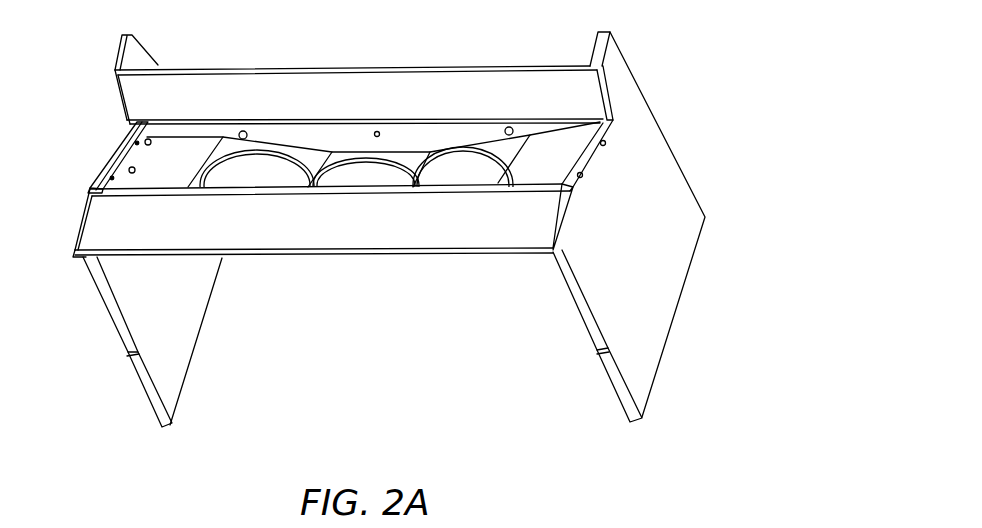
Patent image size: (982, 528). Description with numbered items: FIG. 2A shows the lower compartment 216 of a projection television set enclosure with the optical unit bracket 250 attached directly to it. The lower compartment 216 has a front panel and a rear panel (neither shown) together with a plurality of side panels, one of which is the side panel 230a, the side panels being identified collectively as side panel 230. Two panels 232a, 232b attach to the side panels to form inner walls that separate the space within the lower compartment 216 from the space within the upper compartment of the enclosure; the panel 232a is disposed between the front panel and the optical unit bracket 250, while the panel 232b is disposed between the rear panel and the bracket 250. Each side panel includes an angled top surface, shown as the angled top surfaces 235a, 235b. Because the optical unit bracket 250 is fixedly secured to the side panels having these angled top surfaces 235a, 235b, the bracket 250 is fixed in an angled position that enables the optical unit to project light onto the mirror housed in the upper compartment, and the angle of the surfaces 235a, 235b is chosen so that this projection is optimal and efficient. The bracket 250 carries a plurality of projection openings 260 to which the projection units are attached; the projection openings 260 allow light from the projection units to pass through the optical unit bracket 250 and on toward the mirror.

The lower compartment 216 is at (248, 441).
The side panel 230 is at (648, 312).
The side panel 230a is at (117, 328).
The panel 232a is at (403, 231).
The panel 232b is at (390, 90).
The angled top surface 235a is at (100, 160).
The angled top surface 235b is at (597, 167).
The optical unit bracket 250 is at (567, 152).
The projection openings 260 is at (278, 163).